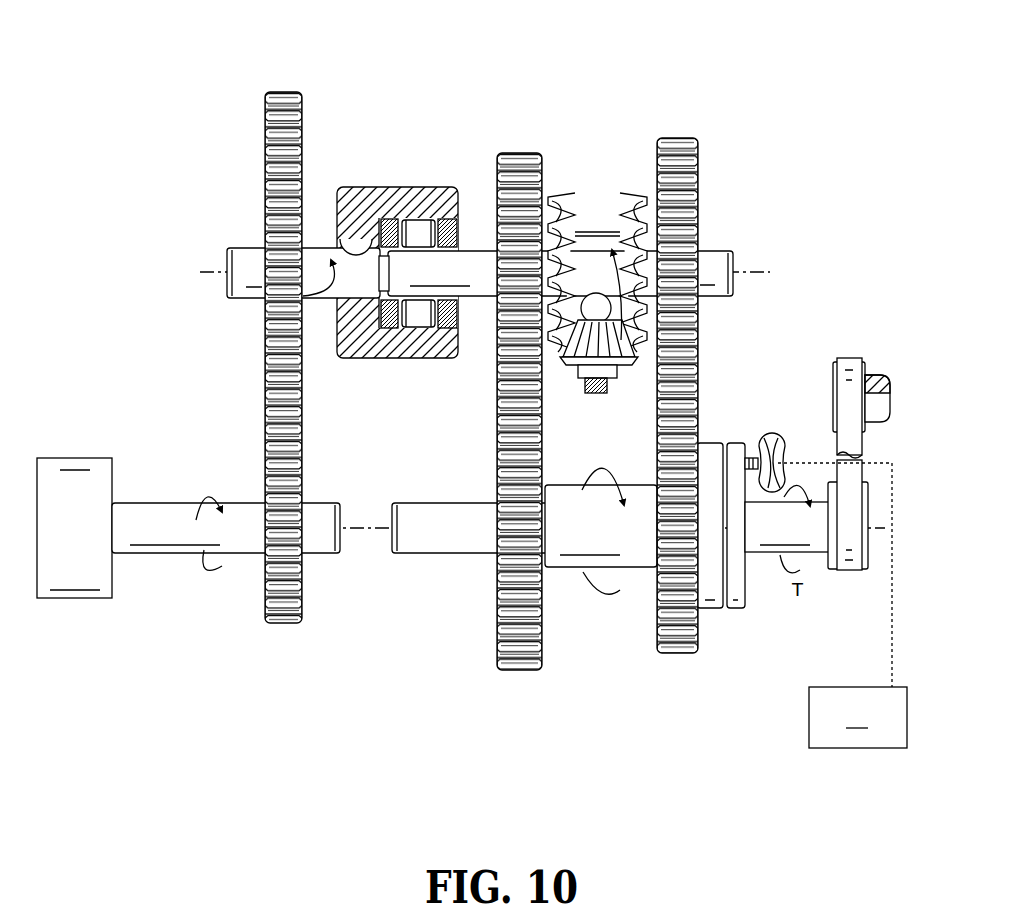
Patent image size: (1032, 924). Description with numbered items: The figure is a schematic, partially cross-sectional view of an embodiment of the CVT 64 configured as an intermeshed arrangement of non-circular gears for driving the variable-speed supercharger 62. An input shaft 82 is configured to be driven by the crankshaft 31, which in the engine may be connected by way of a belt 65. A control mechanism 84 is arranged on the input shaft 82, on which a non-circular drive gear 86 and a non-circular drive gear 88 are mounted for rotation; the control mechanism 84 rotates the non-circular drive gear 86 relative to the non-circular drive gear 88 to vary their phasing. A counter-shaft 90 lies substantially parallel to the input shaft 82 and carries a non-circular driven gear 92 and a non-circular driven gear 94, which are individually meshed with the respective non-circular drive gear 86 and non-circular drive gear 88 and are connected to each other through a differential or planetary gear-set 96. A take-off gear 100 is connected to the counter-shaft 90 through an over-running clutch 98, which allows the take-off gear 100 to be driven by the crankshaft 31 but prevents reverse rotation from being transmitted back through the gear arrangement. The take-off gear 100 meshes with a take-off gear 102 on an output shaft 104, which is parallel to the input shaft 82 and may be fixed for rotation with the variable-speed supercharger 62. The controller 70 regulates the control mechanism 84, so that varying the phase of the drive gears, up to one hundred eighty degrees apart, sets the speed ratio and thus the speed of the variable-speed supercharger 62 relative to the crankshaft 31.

The crankshaft 31 is at (871, 382).
The variable-speed supercharger 62 is at (60, 468).
The CVT 64 is at (622, 388).
The belt 65 is at (853, 530).
The controller 70 is at (842, 605).
The input shaft 82 is at (808, 505).
The control mechanism 84 is at (770, 437).
The non-circular drive gear 86 is at (698, 650).
The non-circular drive gear 88 is at (513, 672).
The counter-shaft 90 is at (713, 250).
The non-circular driven gear 92 is at (703, 400).
The non-circular driven gear 94 is at (518, 406).
The differential or planetary gear-set 96 is at (600, 230).
The over-running clutch 98 is at (398, 180).
The take-off gear 100 is at (279, 384).
The take-off gear 102 is at (302, 600).
The output shaft 104 is at (185, 553).